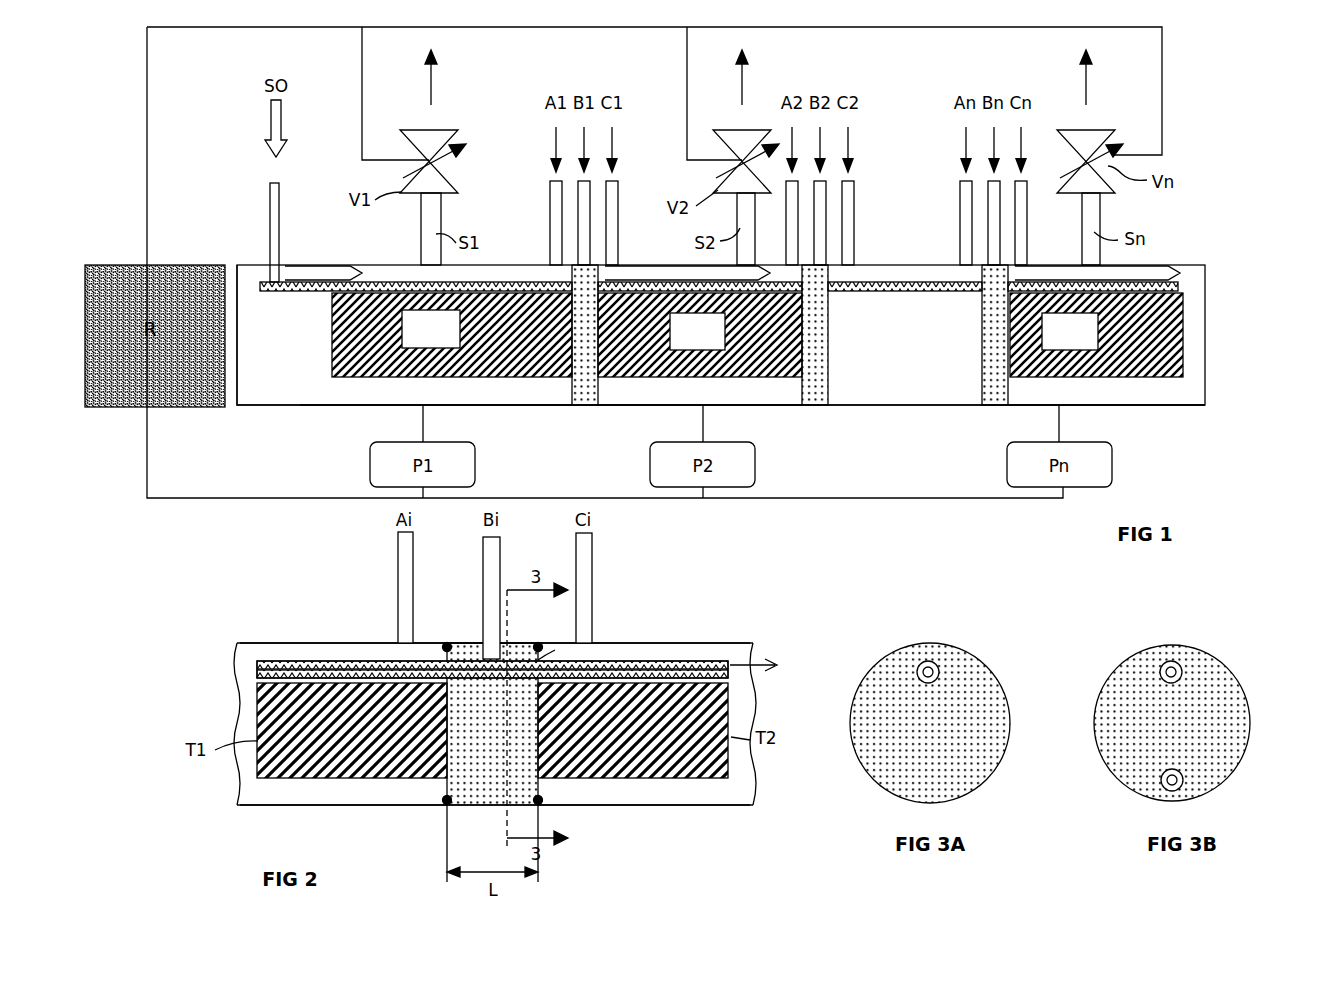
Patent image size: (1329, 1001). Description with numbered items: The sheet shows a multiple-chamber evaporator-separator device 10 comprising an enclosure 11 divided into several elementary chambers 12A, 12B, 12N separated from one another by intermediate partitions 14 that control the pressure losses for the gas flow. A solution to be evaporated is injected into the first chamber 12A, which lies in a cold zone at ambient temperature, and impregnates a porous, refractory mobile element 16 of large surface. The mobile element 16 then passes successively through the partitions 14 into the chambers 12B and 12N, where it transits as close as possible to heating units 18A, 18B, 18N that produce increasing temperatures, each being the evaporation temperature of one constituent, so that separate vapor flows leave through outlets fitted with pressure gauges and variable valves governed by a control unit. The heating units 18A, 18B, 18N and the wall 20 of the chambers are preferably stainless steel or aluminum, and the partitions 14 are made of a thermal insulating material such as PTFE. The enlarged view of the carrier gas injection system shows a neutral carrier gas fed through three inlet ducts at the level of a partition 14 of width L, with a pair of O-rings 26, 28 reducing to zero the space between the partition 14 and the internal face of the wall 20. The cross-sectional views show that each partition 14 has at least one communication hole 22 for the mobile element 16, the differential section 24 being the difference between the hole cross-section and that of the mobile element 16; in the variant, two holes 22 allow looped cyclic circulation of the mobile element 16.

In FIG. 1, the evaporator-separator device 10 is at (217, 520).
In FIG. 1, the enclosure 11 is at (308, 410).
In FIG. 1, the first chamber 12A is at (246, 284).
In FIG. 2, the first chamber 12A is at (284, 792).
In FIG. 1, the second chamber 12B is at (683, 392).
In FIG. 2, the second chamber 12B is at (708, 793).
In FIG. 1, the nth chamber 12N is at (1160, 390).
In FIG. 2, the intermediate partition 14 is at (480, 790).
In FIG. 1, the mobile element 16 is at (298, 294).
In FIG. 2, the mobile element 16 is at (668, 660).
In FIG. 3A, the mobile element 16 is at (935, 665).
In FIG. 3B, the mobile element 16 is at (1183, 772).
In FIG. 1, the heating unit 18A is at (520, 378).
In FIG. 2, the heating unit 18A is at (361, 752).
In FIG. 1, the heating unit 18B is at (770, 356).
In FIG. 2, the heating unit 18B is at (657, 758).
In FIG. 1, the heating unit 18N is at (1157, 341).
In FIG. 1, the wall 20 is at (352, 408).
In FIG. 2, the wall 20 is at (293, 645).
In FIG. 2, the communication hole 22 is at (548, 656).
In FIG. 3A, the communication hole 22 is at (942, 670).
In FIG. 3A, the differential section 24 is at (920, 672).
In FIG. 2, the O-ring 26 is at (448, 644).
In FIG. 2, the O-ring 28 is at (538, 644).